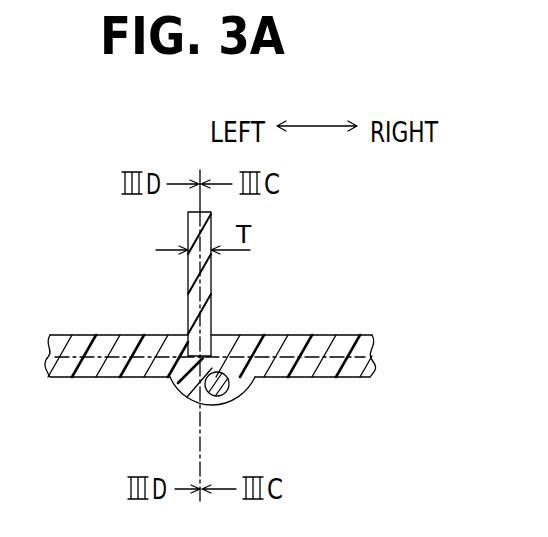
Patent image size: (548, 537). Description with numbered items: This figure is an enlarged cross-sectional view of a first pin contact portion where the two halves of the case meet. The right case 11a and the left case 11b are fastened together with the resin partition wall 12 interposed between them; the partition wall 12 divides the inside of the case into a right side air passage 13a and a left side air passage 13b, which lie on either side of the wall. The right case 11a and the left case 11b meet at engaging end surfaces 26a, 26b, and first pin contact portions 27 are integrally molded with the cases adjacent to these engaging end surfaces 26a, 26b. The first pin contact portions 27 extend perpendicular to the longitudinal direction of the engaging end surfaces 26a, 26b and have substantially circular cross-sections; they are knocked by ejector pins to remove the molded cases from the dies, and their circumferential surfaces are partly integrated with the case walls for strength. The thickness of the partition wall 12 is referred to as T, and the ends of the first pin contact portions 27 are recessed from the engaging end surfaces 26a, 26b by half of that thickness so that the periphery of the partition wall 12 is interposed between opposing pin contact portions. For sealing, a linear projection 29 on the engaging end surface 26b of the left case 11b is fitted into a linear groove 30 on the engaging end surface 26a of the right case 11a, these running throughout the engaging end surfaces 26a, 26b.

The right case 11a is at (303, 334).
The left case 11b is at (112, 340).
The partition wall 12 is at (211, 268).
The right side air passage 13a is at (283, 273).
The left side air passage 13b is at (123, 282).
The first pin contact portion 27 is at (216, 337).
The linear projection 29 is at (229, 399).
The linear groove 30 is at (246, 385).
The engaging end surface 26a is at (205, 409).
The engaging end surface 26b is at (199, 382).